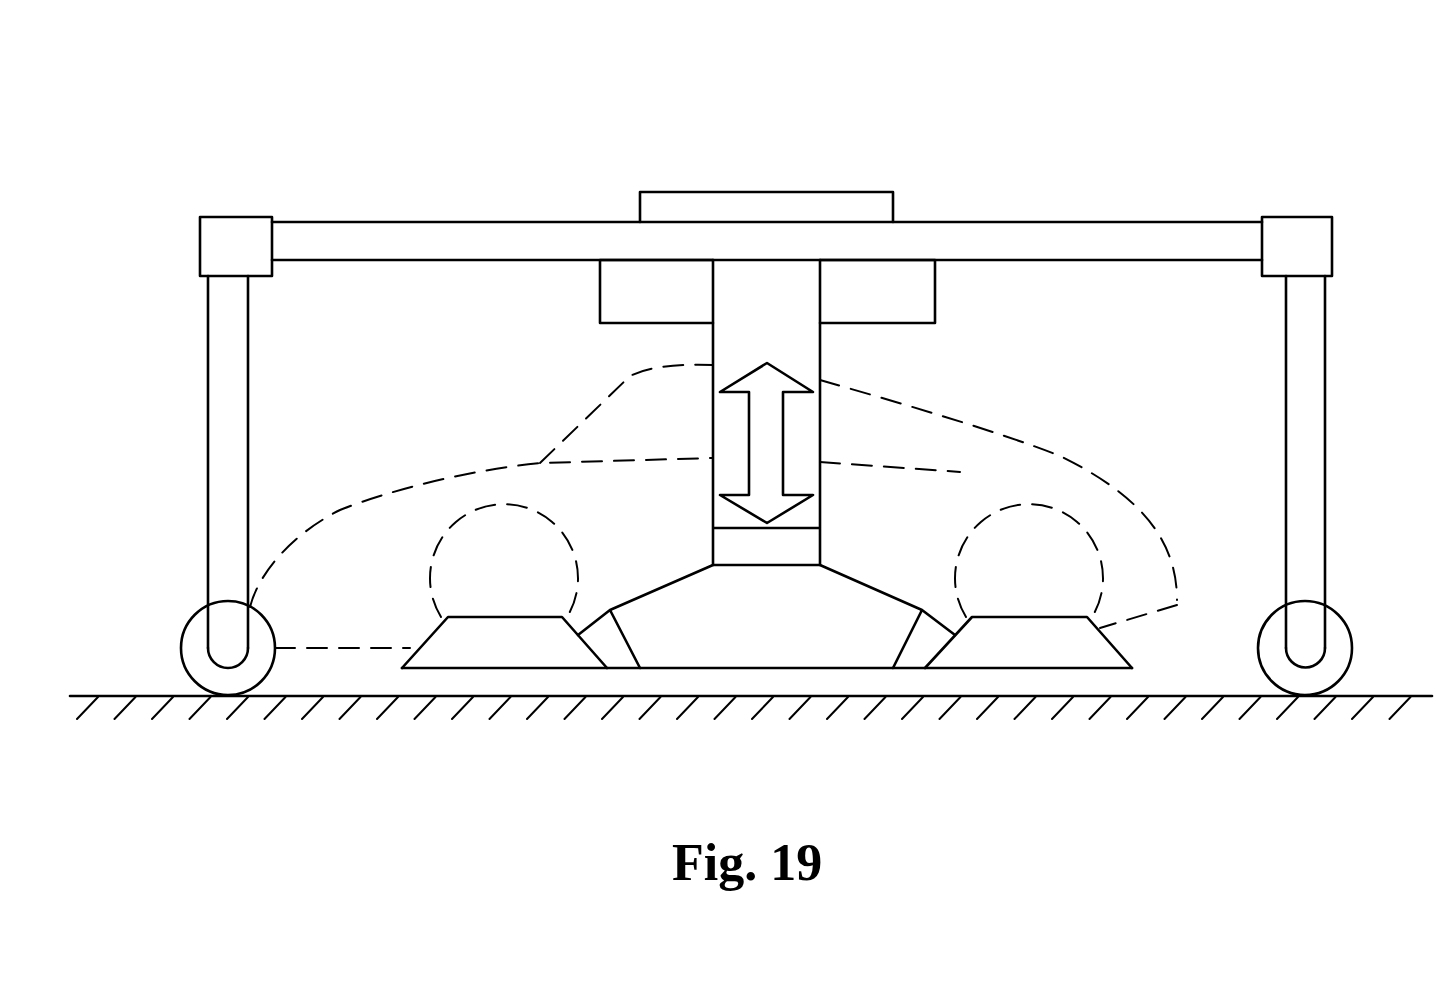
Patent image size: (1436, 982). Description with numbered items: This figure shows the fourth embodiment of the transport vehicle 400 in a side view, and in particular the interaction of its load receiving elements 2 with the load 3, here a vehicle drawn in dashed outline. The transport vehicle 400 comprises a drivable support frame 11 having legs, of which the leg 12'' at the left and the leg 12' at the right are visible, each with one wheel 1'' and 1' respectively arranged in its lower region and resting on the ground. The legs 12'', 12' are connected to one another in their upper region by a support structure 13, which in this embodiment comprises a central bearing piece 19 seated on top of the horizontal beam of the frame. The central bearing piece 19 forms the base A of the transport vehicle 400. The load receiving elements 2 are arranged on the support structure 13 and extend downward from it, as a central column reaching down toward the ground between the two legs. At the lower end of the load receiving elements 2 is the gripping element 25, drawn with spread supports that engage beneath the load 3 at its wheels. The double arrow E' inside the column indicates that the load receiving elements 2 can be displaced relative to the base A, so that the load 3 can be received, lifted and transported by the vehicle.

The transport vehicle 400 is at (1028, 114).
The drivable support frame 11 is at (1130, 243).
The support structure 13 is at (562, 243).
The central bearing piece 19 is at (716, 176).
The base A is at (866, 173).
The load receiving elements 2 is at (808, 358).
The arrow E' is at (807, 443).
The gripping element 25 is at (872, 571).
The load 3 is at (1067, 450).
The leg 12'' is at (188, 462).
The leg 12' is at (1350, 462).
The wheel 1'' is at (193, 648).
The wheel 1' is at (1339, 648).